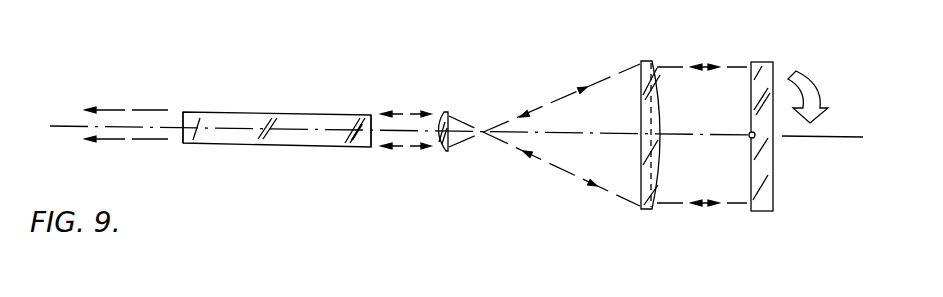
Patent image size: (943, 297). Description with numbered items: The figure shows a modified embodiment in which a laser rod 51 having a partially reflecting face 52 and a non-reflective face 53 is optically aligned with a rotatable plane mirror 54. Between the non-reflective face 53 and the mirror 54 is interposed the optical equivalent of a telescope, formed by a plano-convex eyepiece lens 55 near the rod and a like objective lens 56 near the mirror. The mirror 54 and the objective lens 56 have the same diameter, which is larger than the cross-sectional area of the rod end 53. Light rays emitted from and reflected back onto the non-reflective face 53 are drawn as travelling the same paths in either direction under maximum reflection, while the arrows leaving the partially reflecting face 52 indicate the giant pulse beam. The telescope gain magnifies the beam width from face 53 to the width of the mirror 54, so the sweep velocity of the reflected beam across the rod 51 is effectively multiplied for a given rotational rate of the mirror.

The laser rod 51 is at (236, 110).
The partially reflecting face 52 is at (184, 142).
The non-reflective face 53 is at (372, 148).
The rotatable plane mirror 54 is at (762, 62).
The plano-convex eyepiece lens 55 is at (447, 112).
The objective lens 56 is at (648, 61).